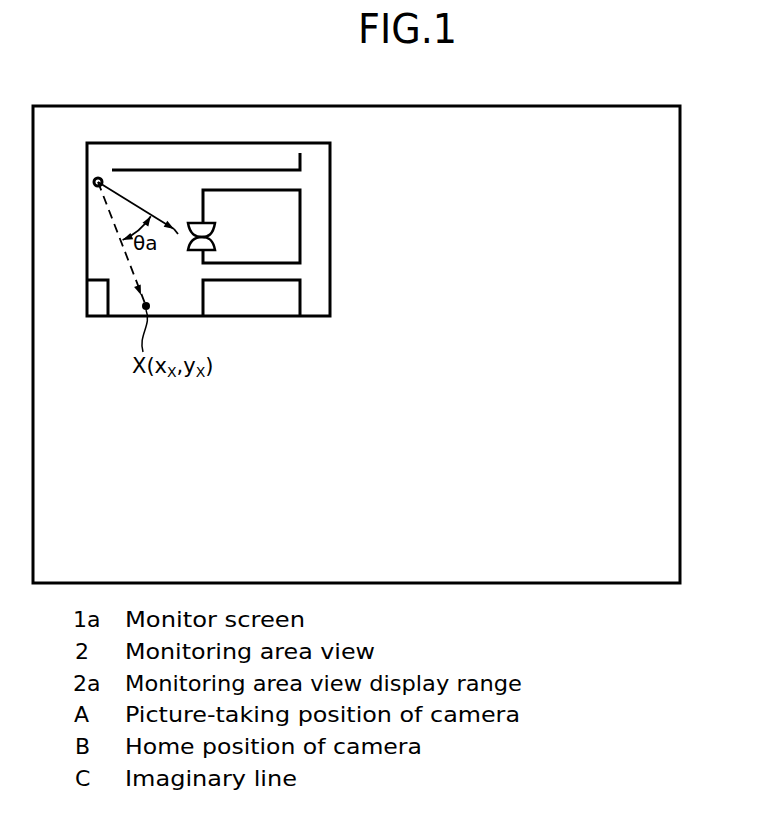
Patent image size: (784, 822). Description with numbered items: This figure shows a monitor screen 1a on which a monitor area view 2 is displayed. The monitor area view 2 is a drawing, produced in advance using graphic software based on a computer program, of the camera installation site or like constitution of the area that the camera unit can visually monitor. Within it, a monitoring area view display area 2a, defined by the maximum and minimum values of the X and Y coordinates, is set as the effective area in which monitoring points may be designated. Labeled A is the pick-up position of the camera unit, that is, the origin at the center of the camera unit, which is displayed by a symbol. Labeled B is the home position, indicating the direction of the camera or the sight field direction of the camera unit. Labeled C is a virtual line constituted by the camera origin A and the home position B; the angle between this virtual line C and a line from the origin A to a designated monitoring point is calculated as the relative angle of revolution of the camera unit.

The monitor screen 1a is at (568, 107).
The monitor area view 2 is at (330, 272).
The monitoring area view display area 2a is at (262, 152).
The pick-up position of the camera unit A is at (95, 179).
The home position B is at (178, 234).
The virtual line C is at (106, 203).